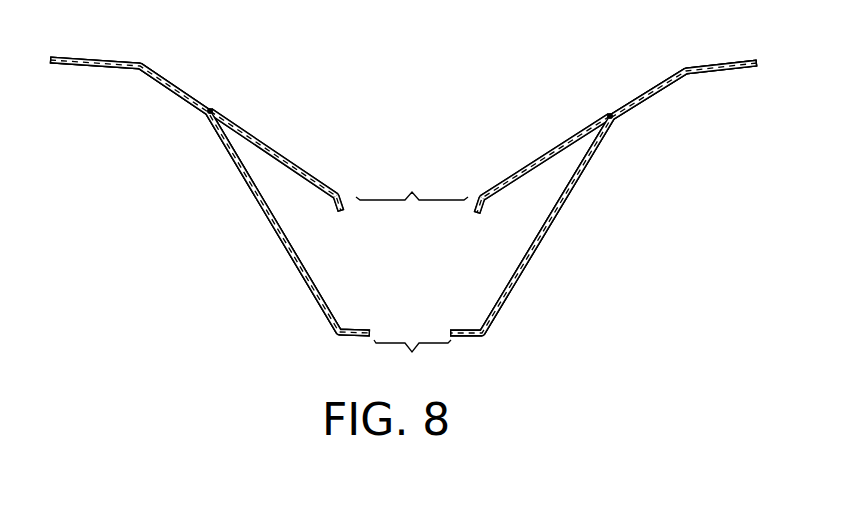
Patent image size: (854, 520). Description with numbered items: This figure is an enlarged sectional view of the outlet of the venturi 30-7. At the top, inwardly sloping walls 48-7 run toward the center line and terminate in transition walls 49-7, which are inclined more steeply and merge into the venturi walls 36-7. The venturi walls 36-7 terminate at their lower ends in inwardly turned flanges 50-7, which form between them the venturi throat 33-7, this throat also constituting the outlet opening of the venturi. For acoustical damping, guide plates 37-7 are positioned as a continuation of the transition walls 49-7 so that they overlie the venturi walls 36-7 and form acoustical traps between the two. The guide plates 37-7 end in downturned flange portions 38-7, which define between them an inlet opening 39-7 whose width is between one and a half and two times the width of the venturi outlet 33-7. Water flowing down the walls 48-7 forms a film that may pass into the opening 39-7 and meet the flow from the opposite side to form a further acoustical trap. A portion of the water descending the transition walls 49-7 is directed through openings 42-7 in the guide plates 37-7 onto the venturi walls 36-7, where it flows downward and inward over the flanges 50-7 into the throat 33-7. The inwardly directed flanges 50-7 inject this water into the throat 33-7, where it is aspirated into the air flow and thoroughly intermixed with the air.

The venturi 30-7 is at (302, 291).
The inwardly sloping walls 48-7 is at (95, 58).
The transition walls 49-7 is at (164, 82).
The openings 42-7 is at (212, 108).
The guide plates 37-7 is at (297, 167).
The downturned flange portions 38-7 is at (345, 202).
The inlet opening 39-7 is at (412, 185).
The venturi walls 36-7 is at (262, 212).
The inwardly turned flanges 50-7 is at (351, 331).
The venturi throat 33-7 is at (412, 356).